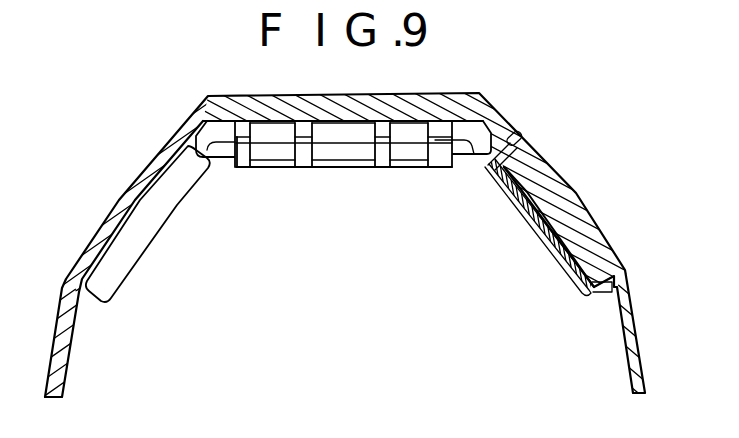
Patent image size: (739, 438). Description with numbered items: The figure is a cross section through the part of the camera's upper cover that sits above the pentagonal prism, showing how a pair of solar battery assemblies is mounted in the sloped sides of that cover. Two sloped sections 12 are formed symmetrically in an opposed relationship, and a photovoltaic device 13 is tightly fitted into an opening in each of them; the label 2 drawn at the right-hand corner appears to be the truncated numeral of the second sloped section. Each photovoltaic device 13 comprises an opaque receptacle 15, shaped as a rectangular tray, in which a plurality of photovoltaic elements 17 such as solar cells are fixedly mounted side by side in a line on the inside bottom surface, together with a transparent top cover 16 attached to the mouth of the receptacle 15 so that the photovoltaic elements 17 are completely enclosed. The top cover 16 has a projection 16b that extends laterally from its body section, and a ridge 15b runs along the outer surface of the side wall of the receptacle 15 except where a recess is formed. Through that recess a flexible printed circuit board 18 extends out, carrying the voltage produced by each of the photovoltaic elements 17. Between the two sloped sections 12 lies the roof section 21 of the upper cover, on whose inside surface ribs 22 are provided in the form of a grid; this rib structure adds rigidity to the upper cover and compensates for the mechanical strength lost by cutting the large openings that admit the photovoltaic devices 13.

The case 2 is at (483, 110).
The sloped section 12 is at (193, 130).
The photovoltaic device 13 is at (121, 202).
The receptacle 15 is at (147, 222).
The ridge 15b is at (603, 296).
The transparent top cover 16 is at (95, 237).
The projection 16b is at (519, 137).
The photovoltaic elements 17 is at (552, 245).
The flexible printed circuit board 18 is at (468, 150).
The roof section 21 is at (447, 105).
The ribs 22 is at (387, 121).